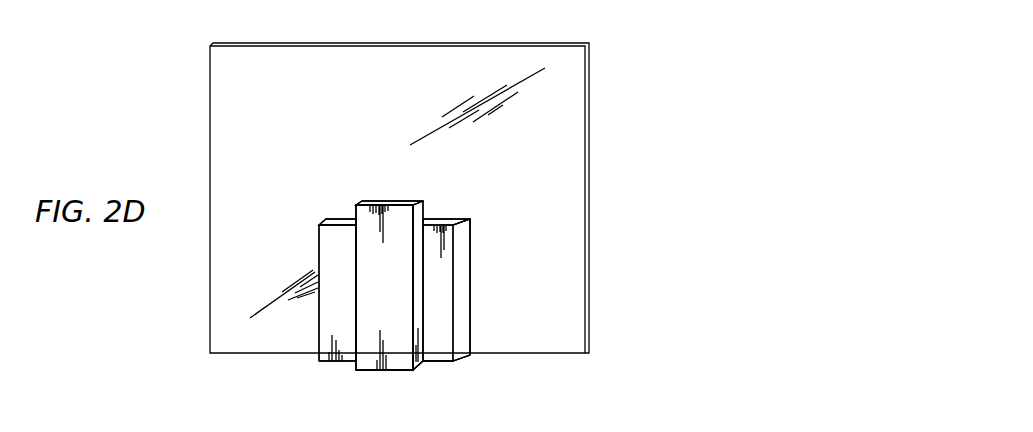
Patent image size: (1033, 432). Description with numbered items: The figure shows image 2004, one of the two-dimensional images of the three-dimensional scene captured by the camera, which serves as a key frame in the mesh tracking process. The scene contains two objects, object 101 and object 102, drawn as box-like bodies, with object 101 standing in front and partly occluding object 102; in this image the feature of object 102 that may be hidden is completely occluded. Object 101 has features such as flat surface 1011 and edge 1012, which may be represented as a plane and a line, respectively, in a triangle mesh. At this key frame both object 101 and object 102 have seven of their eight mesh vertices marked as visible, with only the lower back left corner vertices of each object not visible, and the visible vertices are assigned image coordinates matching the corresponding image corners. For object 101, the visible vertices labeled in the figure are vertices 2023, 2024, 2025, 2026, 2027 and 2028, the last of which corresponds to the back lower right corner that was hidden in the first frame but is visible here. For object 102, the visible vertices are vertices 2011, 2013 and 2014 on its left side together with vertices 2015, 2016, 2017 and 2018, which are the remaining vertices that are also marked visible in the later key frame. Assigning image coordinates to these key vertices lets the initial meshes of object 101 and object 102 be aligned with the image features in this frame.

The image 2004 is at (632, 49).
The object 101 is at (366, 201).
The object 102 is at (450, 219).
The vertex 2011 is at (336, 222).
The vertex 2013 is at (320, 226).
The vertex 2014 is at (319, 361).
The vertex 2023 is at (356, 220).
The vertex 2024 is at (357, 205).
The vertex 2025 is at (423, 201).
The vertex 2026 is at (412, 370).
The vertex 2027 is at (433, 220).
The vertex 2028 is at (424, 362).
The vertex 2015 is at (471, 224).
The vertex 2016 is at (453, 362).
The vertex 2017 is at (470, 220).
The vertex 2018 is at (473, 355).
The flat surface 1011 is at (392, 313).
The edge 1012 is at (413, 254).